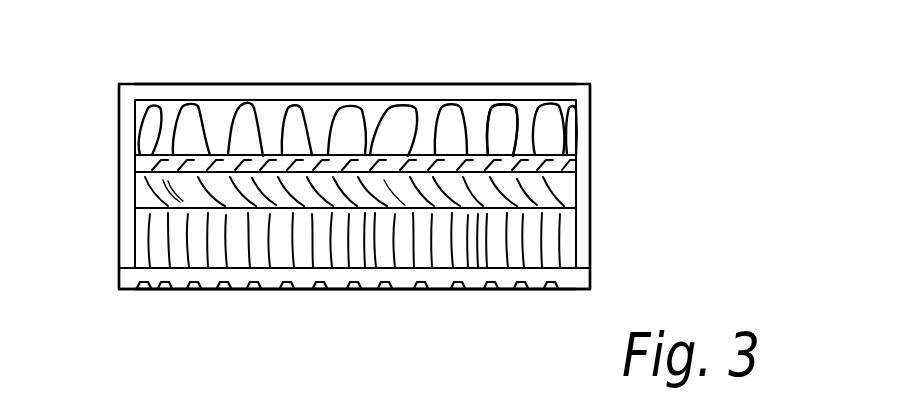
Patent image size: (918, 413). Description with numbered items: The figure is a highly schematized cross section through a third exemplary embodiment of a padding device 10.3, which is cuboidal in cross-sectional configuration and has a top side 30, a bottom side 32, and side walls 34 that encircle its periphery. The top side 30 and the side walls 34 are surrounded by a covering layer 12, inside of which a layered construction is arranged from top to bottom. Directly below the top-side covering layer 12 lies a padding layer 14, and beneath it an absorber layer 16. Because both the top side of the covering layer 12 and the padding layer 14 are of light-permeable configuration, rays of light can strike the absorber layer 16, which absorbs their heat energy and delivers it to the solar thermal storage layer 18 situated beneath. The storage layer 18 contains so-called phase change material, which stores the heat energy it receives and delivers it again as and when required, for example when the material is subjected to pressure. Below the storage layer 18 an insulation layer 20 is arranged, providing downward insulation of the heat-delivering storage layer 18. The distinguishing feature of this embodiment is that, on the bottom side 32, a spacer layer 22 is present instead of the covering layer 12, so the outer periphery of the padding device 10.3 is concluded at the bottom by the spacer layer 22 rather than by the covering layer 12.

The padding device 10.3 is at (628, 84).
The covering layer 12 is at (133, 125).
The padding layer 14 is at (527, 128).
The absorber layer 16 is at (560, 165).
The solar thermal storage layer 18 is at (542, 182).
The insulation layer 20 is at (553, 256).
The spacer layer 22 is at (402, 280).
The top side 30 is at (255, 83).
The bottom side 32 is at (246, 295).
The side walls 34 is at (117, 183).